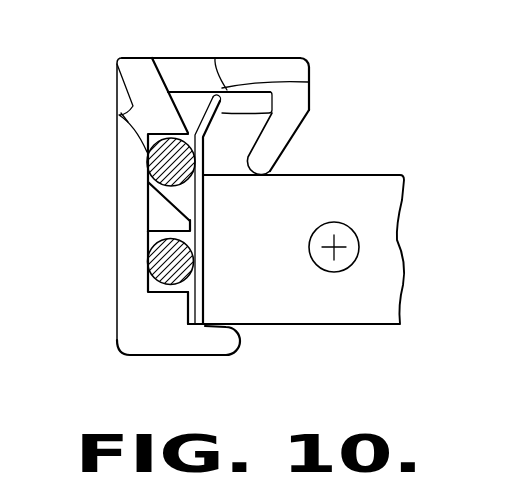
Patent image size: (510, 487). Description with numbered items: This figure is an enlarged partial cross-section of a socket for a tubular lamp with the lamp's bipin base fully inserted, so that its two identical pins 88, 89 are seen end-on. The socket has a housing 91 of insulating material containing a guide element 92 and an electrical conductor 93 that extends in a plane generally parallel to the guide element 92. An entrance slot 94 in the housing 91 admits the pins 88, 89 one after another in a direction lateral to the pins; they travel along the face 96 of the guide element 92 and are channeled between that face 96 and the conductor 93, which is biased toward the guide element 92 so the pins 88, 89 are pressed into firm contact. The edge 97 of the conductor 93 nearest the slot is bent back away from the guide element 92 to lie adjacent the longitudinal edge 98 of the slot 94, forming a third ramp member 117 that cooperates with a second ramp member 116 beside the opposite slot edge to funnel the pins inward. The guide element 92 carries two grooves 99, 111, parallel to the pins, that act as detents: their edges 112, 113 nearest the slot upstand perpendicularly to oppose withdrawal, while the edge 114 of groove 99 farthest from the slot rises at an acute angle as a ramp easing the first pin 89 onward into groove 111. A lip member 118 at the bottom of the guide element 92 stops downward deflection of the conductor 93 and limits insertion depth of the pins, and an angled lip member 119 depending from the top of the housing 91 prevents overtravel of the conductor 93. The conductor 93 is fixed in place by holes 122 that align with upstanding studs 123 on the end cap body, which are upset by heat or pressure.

The pin 88 is at (160, 168).
The pin 89 is at (158, 268).
The housing 91 is at (260, 58).
The guide element 92 is at (106, 291).
The electrical conductor 93 is at (334, 325).
The entrance slot 94 is at (182, 70).
The face 96 is at (190, 228).
The edge 97 is at (272, 112).
The longitudinal edge 98 is at (215, 57).
The groove 99 is at (148, 152).
The groove 111 is at (148, 250).
The edge 112 is at (119, 115).
The edge 113 is at (148, 229).
The edge 114 is at (177, 202).
The second ramp member 116 is at (165, 56).
The third ramp member 117 is at (308, 82).
The lip member 118 is at (215, 355).
The angled lip member 119 is at (282, 151).
The holes 122 is at (325, 230).
The upstanding studs 123 is at (340, 263).